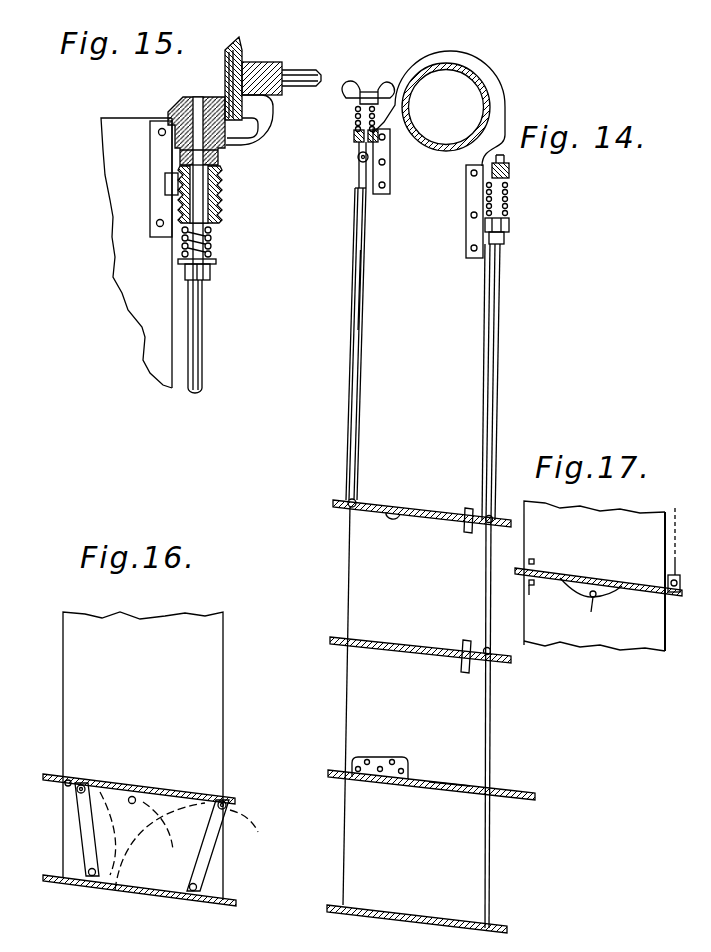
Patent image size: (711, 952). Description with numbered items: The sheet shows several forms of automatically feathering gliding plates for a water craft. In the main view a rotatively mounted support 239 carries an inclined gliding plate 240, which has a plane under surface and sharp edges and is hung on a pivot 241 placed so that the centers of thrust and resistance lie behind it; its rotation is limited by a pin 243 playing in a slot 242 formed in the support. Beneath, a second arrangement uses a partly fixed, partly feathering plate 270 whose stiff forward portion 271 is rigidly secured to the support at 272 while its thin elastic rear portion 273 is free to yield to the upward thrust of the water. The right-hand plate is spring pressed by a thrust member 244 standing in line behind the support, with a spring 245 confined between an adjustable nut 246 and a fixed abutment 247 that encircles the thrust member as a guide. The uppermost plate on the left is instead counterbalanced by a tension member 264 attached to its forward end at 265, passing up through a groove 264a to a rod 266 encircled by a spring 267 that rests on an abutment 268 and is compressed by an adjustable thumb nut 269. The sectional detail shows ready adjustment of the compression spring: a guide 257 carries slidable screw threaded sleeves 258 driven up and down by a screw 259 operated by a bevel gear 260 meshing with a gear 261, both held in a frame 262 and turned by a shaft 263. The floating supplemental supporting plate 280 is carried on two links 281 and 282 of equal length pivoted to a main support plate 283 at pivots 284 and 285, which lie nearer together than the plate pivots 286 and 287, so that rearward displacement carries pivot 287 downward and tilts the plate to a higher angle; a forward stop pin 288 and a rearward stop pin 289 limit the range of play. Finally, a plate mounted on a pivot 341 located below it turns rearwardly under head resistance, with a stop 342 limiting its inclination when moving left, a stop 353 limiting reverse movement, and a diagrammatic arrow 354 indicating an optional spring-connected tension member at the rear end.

In FIG. 14, the support 239 is at (431, 706).
In FIG. 17, the support 239 is at (594, 576).
In FIG. 16, the support 239 is at (143, 756).
In FIG. 14, the inclined gliding plate 240 is at (424, 499).
In FIG. 14, the pivot 241 is at (392, 516).
In FIG. 14, the slot 242 is at (466, 534).
In FIG. 14, the pin 243 is at (481, 508).
In FIG. 15, the thrust member 244 is at (203, 328).
In FIG. 14, the thrust member 244 is at (499, 306).
In FIG. 15, the spring 245 is at (212, 238).
In FIG. 14, the spring 245 is at (509, 196).
In FIG. 15, the adjustable nut 246 is at (211, 273).
In FIG. 14, the adjustable nut 246 is at (510, 224).
In FIG. 14, the fixed abutment 247 is at (510, 172).
In FIG. 15, the guide 257 is at (224, 181).
In FIG. 15, the screw threaded sleeves 258 is at (224, 201).
In FIG. 15, the screw 259 is at (220, 158).
In FIG. 15, the bevel gear 260 is at (205, 104).
In FIG. 15, the gear 261 is at (240, 55).
In FIG. 15, the frame 262 is at (272, 104).
In FIG. 15, the shaft 263 is at (302, 72).
In FIG. 14, the tension member 264 is at (352, 266).
In FIG. 14, the groove 264a is at (359, 290).
In FIG. 14, the attachment point 265 is at (346, 503).
In FIG. 14, the rod 266 is at (357, 159).
In FIG. 14, the spring 267 is at (354, 112).
In FIG. 14, the abutment 268 is at (353, 136).
In FIG. 14, the adjustable thumb nut 269 is at (358, 82).
In FIG. 14, the plate 270 is at (396, 775).
In FIG. 14, the forward portion 271 is at (395, 760).
In FIG. 14, the securing point 272 is at (367, 759).
In FIG. 14, the rear portion 273 is at (455, 773).
In FIG. 16, the floating supplemental supporting plate 280 is at (112, 766).
In FIG. 16, the link 281 is at (86, 830).
In FIG. 16, the link 282 is at (210, 844).
In FIG. 16, the main support plate 283 is at (127, 891).
In FIG. 16, the pivot 284 is at (88, 878).
In FIG. 16, the pivot 285 is at (191, 893).
In FIG. 16, the pivot 286 is at (76, 790).
In FIG. 16, the pivot 287 is at (228, 805).
In FIG. 16, the pin 288 is at (66, 781).
In FIG. 16, the pin 289 is at (135, 797).
In FIG. 17, the pivot 341 is at (591, 605).
In FIG. 17, the stop 342 is at (540, 552).
In FIG. 17, the stop 353 is at (547, 598).
In FIG. 17, the diagrammatic arrow 354 is at (670, 574).